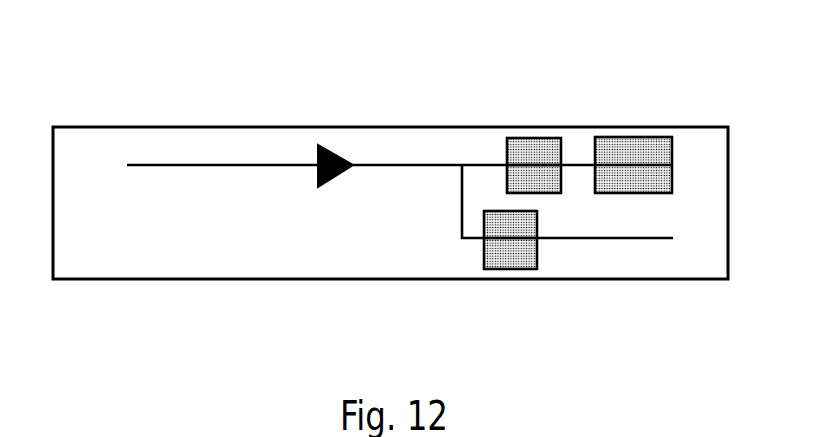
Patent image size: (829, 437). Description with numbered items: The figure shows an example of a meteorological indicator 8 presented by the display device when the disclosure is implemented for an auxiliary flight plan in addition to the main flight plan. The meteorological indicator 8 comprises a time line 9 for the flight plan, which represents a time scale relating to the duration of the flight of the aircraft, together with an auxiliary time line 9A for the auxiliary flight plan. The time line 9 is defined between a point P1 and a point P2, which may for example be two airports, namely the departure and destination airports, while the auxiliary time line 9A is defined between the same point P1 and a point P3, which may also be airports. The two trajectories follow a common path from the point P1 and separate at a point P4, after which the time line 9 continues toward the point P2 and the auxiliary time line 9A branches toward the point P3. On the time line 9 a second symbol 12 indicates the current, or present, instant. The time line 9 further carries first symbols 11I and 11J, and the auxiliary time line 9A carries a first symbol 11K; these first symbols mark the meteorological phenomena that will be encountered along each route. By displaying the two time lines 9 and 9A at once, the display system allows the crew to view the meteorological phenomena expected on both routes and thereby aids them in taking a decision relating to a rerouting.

The meteorological indicator 8 is at (149, 310).
The time line 9 is at (481, 165).
The auxiliary time line 9A is at (606, 240).
The first symbol 11I is at (531, 150).
The first symbol 11J is at (648, 150).
The first symbol 11K is at (513, 269).
The second symbol 12 is at (342, 153).
The point P1 is at (208, 164).
The point P2 is at (698, 166).
The point P3 is at (698, 238).
The point P4 is at (449, 179).